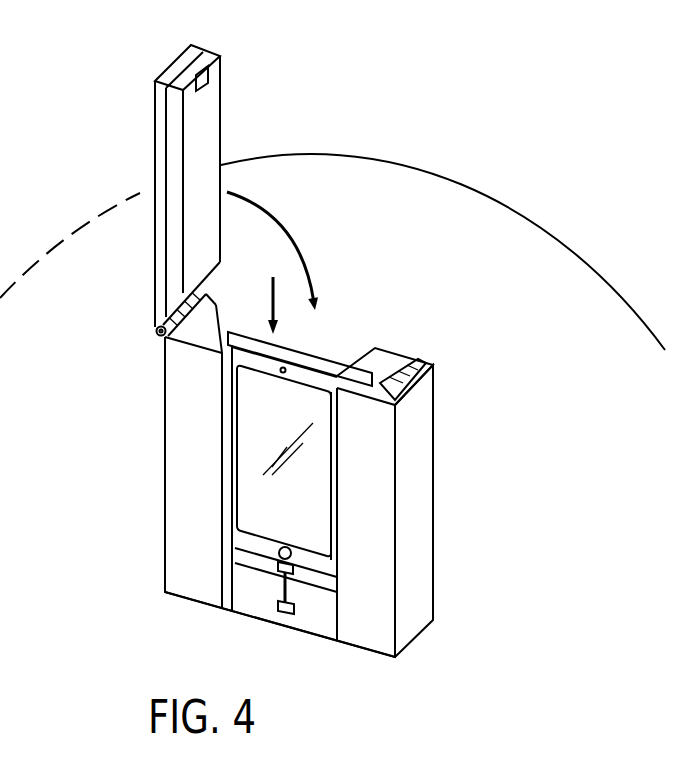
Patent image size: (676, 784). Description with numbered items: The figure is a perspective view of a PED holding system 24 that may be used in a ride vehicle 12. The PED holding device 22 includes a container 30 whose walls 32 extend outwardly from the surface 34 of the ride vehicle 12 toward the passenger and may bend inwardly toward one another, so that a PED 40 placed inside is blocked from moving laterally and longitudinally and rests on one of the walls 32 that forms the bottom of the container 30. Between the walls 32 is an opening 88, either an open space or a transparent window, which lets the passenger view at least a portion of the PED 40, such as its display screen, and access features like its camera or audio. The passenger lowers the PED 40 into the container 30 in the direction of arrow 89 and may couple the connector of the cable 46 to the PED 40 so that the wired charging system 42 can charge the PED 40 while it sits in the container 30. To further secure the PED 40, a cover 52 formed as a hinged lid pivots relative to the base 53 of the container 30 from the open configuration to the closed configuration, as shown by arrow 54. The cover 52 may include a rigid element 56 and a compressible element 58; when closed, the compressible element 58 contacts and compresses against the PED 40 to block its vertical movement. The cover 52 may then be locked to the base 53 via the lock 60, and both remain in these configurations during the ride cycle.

The ride vehicle 12 is at (603, 220).
The PED holding device 22 is at (463, 537).
The PED holding system 24 is at (503, 575).
The container 30 is at (470, 494).
The walls 32 is at (434, 427).
The surface 34 is at (512, 206).
The PED 40 is at (312, 358).
The wired charging system 42 is at (304, 614).
The cable 46 is at (282, 588).
The cover 52 is at (125, 66).
The base 53 is at (165, 465).
The arrow 54 is at (285, 232).
The rigid element 56 is at (154, 140).
The compressible element 58 is at (210, 56).
The lock 60 is at (396, 360).
The opening 88 is at (346, 444).
The arrow 89 is at (271, 297).